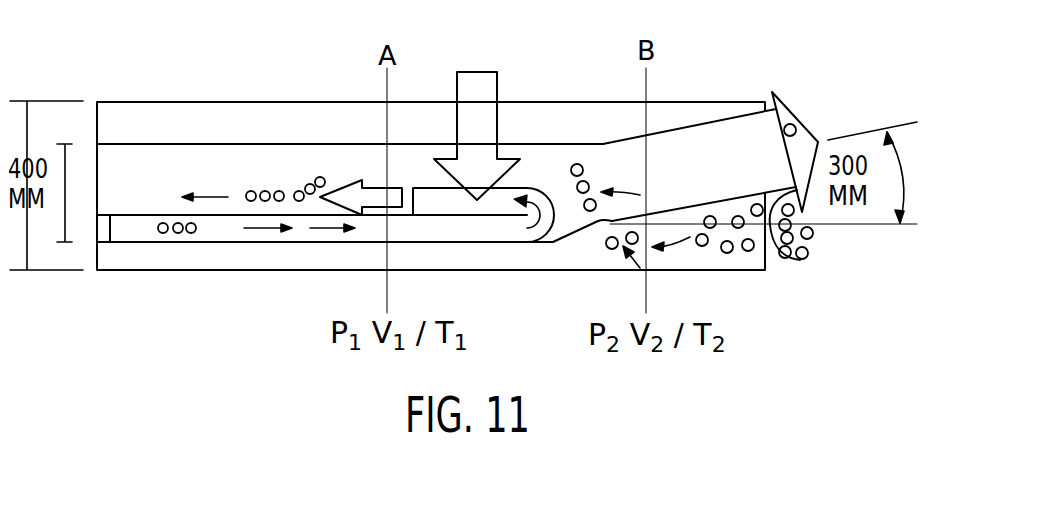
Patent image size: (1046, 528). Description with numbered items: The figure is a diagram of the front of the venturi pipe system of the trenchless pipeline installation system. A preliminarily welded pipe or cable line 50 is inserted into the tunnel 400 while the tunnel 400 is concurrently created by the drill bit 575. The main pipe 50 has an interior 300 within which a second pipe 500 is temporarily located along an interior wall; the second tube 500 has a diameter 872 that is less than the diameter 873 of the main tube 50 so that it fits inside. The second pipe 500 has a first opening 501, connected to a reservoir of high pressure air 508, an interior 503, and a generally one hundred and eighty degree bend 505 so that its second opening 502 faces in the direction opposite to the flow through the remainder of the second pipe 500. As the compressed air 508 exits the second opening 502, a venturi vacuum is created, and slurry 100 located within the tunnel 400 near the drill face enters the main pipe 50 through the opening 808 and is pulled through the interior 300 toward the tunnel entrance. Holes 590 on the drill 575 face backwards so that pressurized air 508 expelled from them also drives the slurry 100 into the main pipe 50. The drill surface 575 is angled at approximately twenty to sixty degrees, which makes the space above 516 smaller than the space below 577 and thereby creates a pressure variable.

The pipe or cable line 50 is at (172, 143).
The slurry 100 is at (265, 190).
The interior 300 is at (198, 167).
The tunnel 400 is at (125, 118).
The second pipe 500 is at (217, 228).
The first opening 501 is at (97, 228).
The second opening 502 is at (413, 188).
The interior 503 is at (477, 227).
The one hundred and eighty degree bend 505 is at (548, 190).
The high pressure air 508 is at (157, 230).
The space above 516 is at (682, 112).
The drill bit 575 is at (805, 118).
The space below 577 is at (678, 212).
The holes 590 is at (790, 122).
The opening 808 is at (797, 120).
The diameter 872 is at (112, 230).
The diameter 873 is at (67, 178).